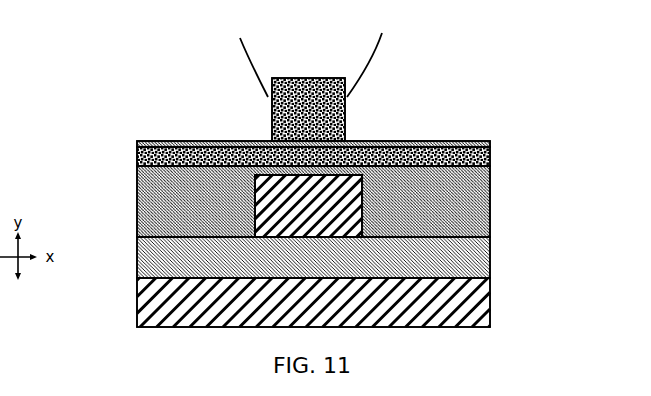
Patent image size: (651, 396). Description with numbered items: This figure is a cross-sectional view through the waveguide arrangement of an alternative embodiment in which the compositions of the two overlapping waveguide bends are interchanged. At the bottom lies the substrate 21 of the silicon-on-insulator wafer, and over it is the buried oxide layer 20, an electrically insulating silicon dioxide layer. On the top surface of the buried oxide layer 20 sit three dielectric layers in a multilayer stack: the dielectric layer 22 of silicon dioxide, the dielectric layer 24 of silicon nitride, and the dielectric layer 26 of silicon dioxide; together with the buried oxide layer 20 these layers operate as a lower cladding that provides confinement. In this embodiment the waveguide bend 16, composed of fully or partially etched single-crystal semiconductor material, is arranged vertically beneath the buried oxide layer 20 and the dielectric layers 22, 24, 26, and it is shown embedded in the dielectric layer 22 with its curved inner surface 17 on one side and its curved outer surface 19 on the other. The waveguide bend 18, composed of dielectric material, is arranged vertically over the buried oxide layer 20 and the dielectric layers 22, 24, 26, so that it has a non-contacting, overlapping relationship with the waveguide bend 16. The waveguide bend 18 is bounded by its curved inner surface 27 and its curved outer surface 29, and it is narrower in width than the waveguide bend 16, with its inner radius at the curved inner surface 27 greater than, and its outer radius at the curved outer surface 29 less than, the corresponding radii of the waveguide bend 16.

The waveguide bend 16 is at (325, 210).
The curved inner surface 17 is at (253, 205).
The waveguide bend 18 is at (323, 121).
The curved outer surface 19 is at (362, 183).
The buried oxide layer 20 is at (148, 257).
The substrate 21 is at (148, 307).
The dielectric layer 22 is at (477, 221).
The dielectric layer 24 is at (148, 157).
The dielectric layer 26 is at (473, 143).
The curved inner surface 27 is at (244, 58).
The curved outer surface 29 is at (371, 54).